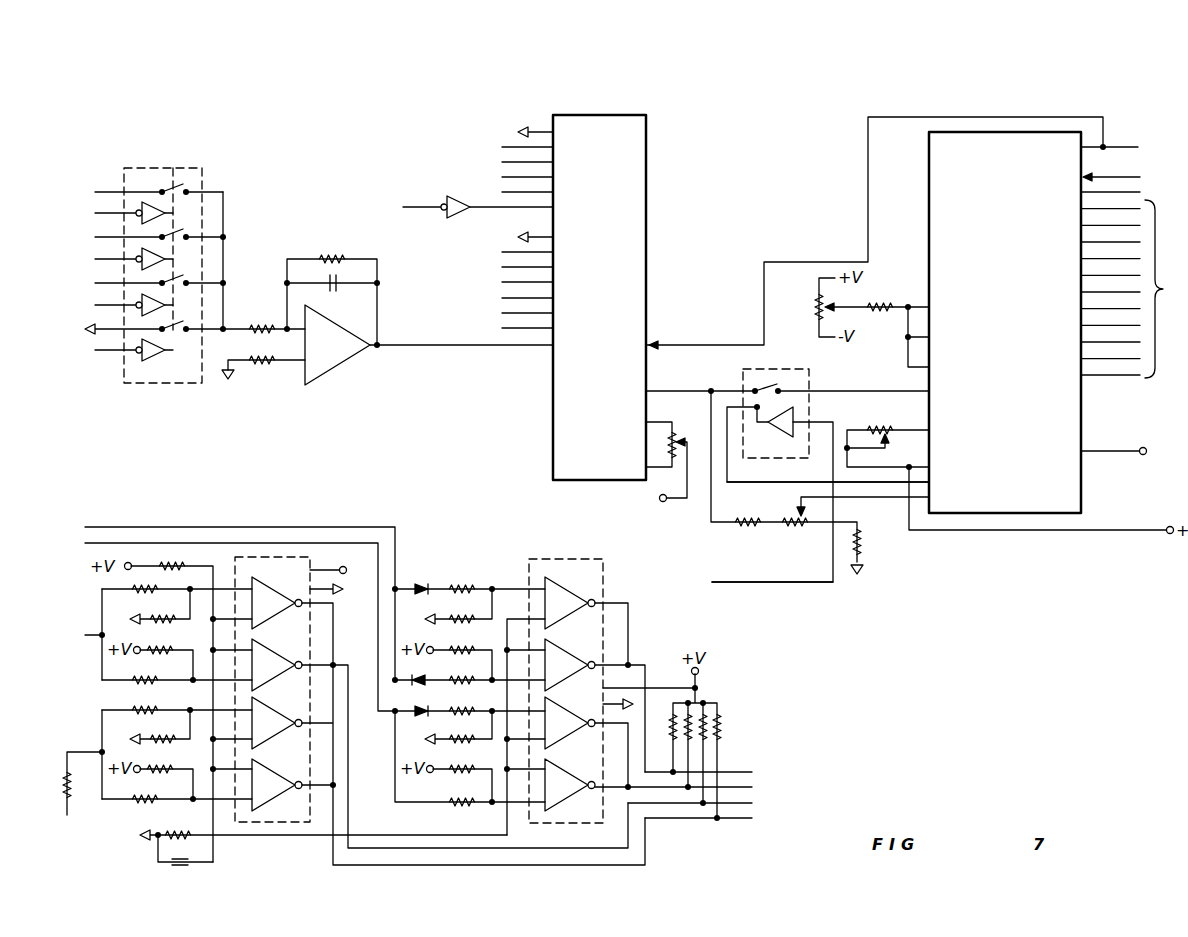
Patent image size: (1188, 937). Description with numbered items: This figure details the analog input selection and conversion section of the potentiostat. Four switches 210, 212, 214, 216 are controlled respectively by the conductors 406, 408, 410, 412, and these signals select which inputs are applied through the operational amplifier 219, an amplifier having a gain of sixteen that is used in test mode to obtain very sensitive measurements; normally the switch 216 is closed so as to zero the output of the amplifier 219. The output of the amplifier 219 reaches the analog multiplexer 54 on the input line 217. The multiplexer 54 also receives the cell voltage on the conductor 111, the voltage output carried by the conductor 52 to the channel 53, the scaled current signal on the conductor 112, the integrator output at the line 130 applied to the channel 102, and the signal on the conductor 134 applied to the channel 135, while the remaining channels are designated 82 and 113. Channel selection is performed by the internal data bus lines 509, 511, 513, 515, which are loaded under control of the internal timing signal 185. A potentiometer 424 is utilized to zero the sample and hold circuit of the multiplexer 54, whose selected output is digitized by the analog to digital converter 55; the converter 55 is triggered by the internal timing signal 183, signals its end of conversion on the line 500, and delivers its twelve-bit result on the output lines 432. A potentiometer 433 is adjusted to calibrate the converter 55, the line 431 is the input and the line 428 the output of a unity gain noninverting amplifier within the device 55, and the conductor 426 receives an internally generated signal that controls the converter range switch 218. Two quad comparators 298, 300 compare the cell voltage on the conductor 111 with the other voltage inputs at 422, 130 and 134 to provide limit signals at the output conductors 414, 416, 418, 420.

The conductor 111 is at (107, 192).
The conductor 406 is at (100, 213).
The conductor 52 is at (100, 237).
The conductor 408 is at (100, 259).
The conductor 112 is at (100, 283).
The conductor 410 is at (95, 305).
The conductor 412 is at (100, 350).
The switch 210 is at (181, 180).
The switch 212 is at (186, 228).
The switch 214 is at (186, 274).
The switch 216 is at (186, 320).
The operational amplifier 219 is at (362, 328).
The input line 217 is at (408, 347).
The analog multiplexer 54 is at (620, 115).
The internal data bus line 509 is at (502, 147).
The internal data bus line 511 is at (502, 162).
The internal data bus line 513 is at (502, 177).
The internal data bus line 515 is at (502, 192).
The internal timing signal 185 is at (430, 207).
The channel 82 is at (502, 252).
The channel 135 is at (502, 282).
The channel 113 is at (502, 298).
The channel 102 is at (502, 313).
The channel 53 is at (502, 328).
The ADC end of conversion signal 500 is at (1120, 147).
The internal timing signal 183 is at (1128, 177).
The digital output bus 432 is at (1134, 285).
The analog to digital converter 55 is at (1090, 469).
The converter range switch 218 is at (770, 390).
The output line 428 is at (752, 482).
The conductor 426 is at (738, 582).
The potentiometer 424 is at (684, 430).
The potentiometer 433 is at (806, 528).
The input line 431 is at (848, 497).
The integrator output 130 is at (125, 527).
The conductor 134 is at (182, 543).
The quad comparator 298 is at (268, 552).
The quad comparator 300 is at (570, 553).
The voltage input 422 is at (67, 813).
The output conductor 414 is at (738, 772).
The output conductor 416 is at (745, 787).
The output conductor 418 is at (748, 803).
The output conductor 420 is at (748, 818).